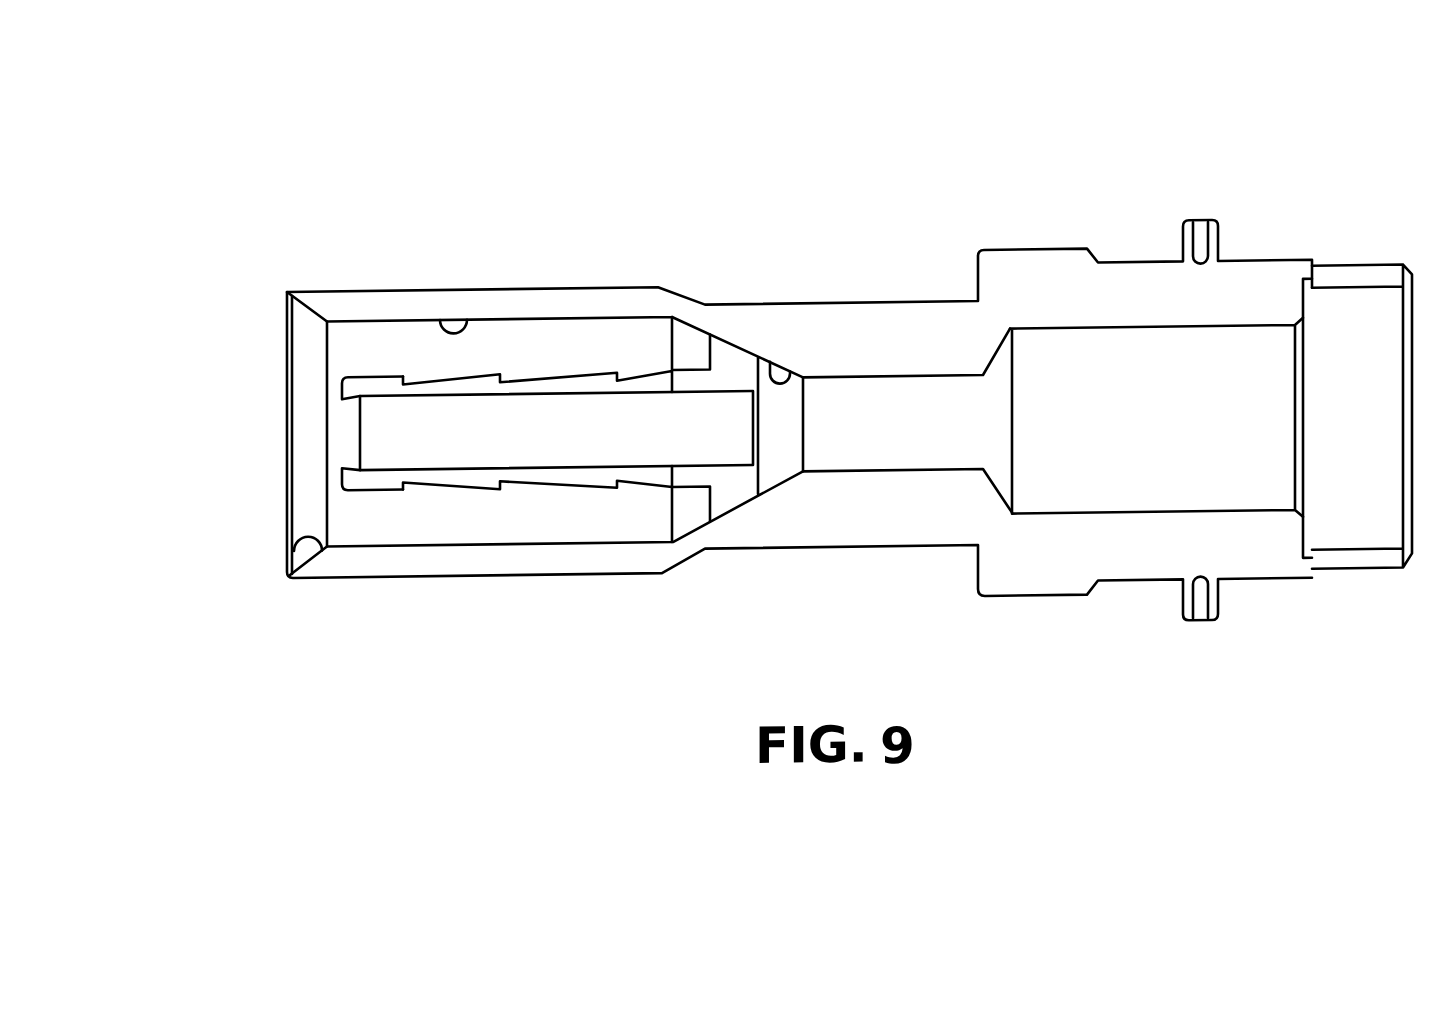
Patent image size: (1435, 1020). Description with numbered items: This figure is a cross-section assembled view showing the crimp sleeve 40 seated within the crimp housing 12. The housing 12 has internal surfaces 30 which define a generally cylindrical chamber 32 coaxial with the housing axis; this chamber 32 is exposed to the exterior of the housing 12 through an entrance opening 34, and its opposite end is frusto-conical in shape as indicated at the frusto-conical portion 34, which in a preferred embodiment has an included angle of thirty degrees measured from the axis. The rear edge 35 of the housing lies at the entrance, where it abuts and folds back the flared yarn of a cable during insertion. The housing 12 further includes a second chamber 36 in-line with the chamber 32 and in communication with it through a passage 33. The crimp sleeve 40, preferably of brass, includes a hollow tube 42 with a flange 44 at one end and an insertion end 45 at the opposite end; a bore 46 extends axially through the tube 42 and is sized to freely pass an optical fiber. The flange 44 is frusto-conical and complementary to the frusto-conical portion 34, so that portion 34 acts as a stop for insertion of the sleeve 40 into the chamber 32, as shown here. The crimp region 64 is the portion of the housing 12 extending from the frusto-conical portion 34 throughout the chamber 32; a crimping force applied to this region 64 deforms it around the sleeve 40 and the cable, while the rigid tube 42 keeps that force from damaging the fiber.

The crimp housing 12 is at (1037, 255).
The internal surfaces 30 is at (468, 322).
The chamber 32 is at (556, 536).
The passage 33 is at (908, 446).
The frusto-conical portion 34 is at (789, 377).
The rear edge 35 is at (288, 297).
The second chamber 36 is at (1186, 443).
The crimp sleeve 40 is at (580, 376).
The hollow tube 42 is at (377, 374).
The flange 44 is at (732, 366).
The insertion end 45 is at (345, 489).
The bore 46 is at (556, 451).
The crimp region 64 is at (803, 599).